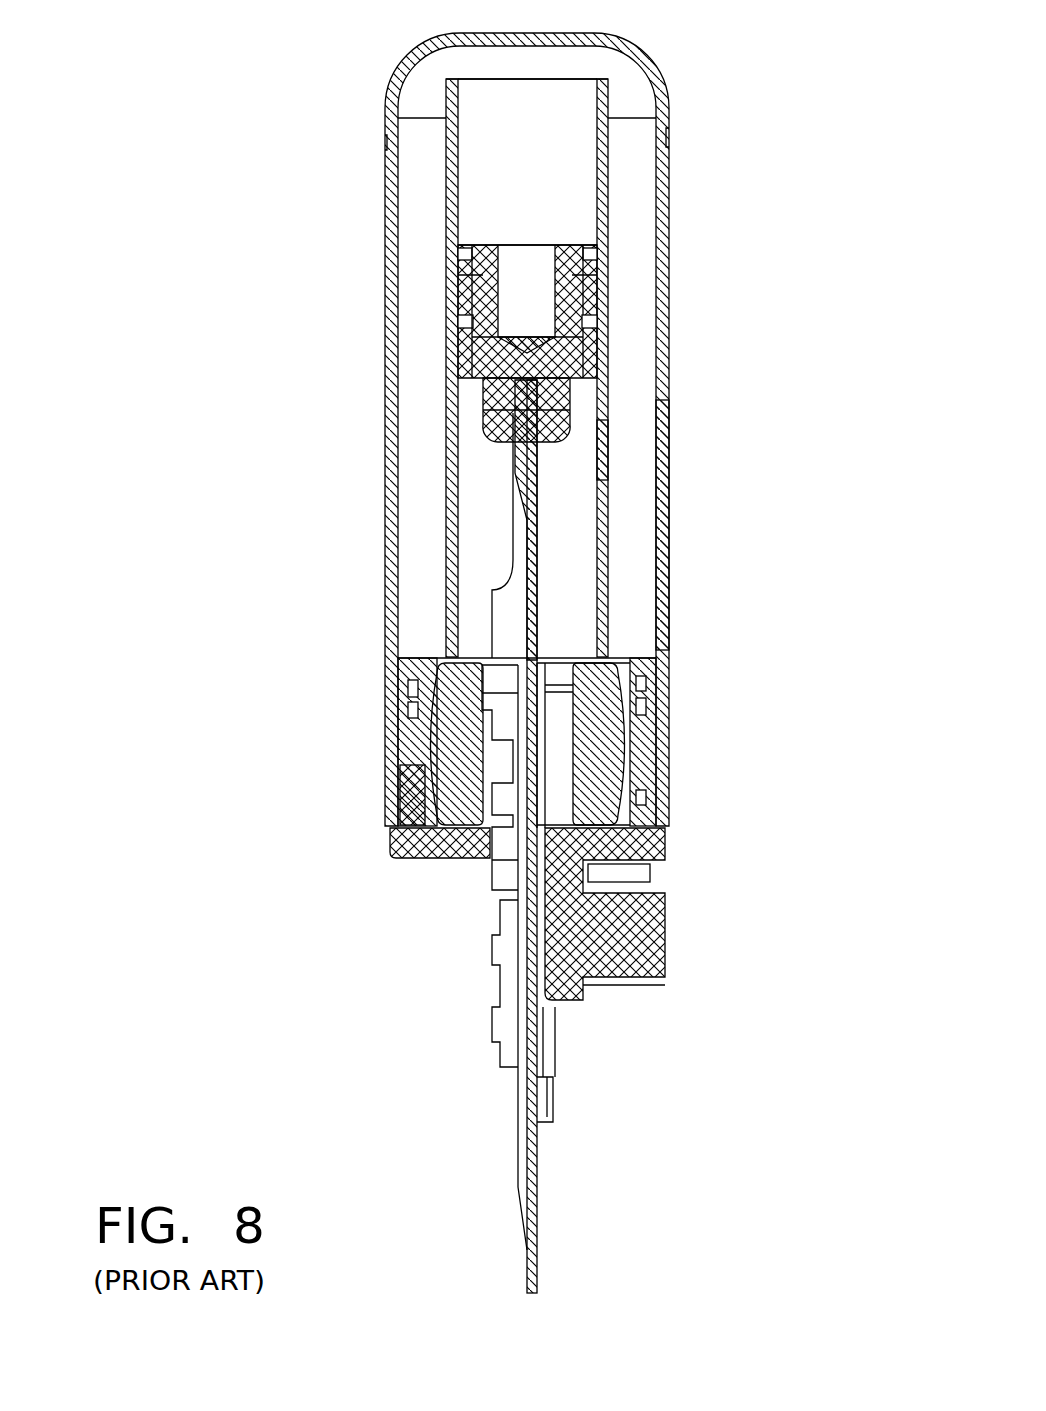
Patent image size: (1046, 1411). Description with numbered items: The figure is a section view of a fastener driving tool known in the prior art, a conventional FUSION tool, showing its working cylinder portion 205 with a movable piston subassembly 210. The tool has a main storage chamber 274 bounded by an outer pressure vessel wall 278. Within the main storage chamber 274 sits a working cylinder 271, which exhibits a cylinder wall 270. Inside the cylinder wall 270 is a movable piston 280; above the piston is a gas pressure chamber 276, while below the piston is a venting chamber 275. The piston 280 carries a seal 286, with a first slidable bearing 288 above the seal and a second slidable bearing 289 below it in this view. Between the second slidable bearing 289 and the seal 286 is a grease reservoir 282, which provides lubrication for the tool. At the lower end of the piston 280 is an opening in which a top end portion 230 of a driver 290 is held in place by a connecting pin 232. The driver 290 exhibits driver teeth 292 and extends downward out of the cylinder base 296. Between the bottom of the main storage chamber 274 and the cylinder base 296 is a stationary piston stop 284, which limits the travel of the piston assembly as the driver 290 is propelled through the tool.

The working cylinder portion 205 is at (365, 80).
The gas pressure chamber 276 is at (575, 150).
The movable piston subassembly 210 is at (478, 225).
The movable piston 280 is at (572, 250).
The first slidable bearing 288 is at (588, 262).
The seal 286 is at (460, 300).
The grease reservoir 282 is at (590, 321).
The second slidable bearing 289 is at (597, 358).
The connecting pin 232 is at (495, 403).
The top end portion of driver 230 is at (525, 463).
The cylinder wall 270 is at (608, 443).
The working cylinder 271 is at (560, 512).
The outer pressure vessel wall 278 is at (668, 498).
The main storage chamber 274 is at (628, 544).
The venting chamber 275 is at (478, 572).
The stationary piston stop 284 is at (590, 762).
The cylinder base 296 is at (415, 858).
The driver teeth 292 is at (502, 1025).
The driver 290 is at (537, 1212).